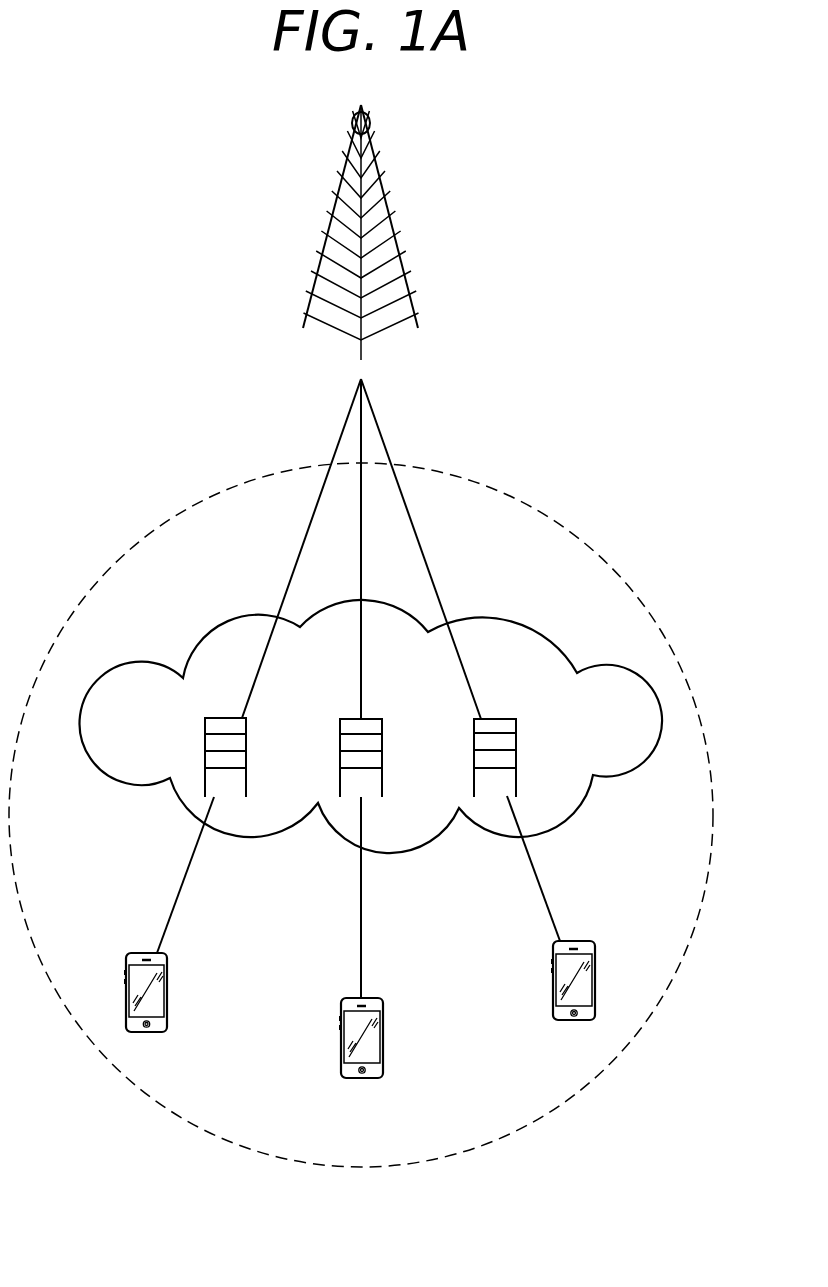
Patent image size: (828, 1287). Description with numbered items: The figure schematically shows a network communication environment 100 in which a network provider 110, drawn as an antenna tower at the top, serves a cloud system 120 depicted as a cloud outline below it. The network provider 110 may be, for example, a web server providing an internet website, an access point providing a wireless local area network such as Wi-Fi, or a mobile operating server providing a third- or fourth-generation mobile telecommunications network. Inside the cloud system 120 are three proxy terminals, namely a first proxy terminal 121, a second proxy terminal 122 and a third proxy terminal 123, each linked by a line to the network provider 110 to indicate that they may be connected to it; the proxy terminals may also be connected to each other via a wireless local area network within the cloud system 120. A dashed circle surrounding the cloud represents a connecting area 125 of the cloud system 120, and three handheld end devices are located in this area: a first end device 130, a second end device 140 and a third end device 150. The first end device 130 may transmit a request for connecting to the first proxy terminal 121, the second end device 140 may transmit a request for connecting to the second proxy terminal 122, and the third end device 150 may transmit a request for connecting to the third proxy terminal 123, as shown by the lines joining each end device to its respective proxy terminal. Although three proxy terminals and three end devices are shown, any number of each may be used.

The network communication environment 100 is at (198, 357).
The network provider 110 is at (393, 228).
The cloud system 120 is at (525, 623).
The first proxy terminal 121 is at (247, 727).
The second proxy terminal 122 is at (383, 727).
The third proxy terminal 123 is at (517, 727).
The connecting area 125 is at (618, 572).
The first end device 130 is at (168, 967).
The second end device 140 is at (384, 1013).
The third end device 150 is at (596, 955).